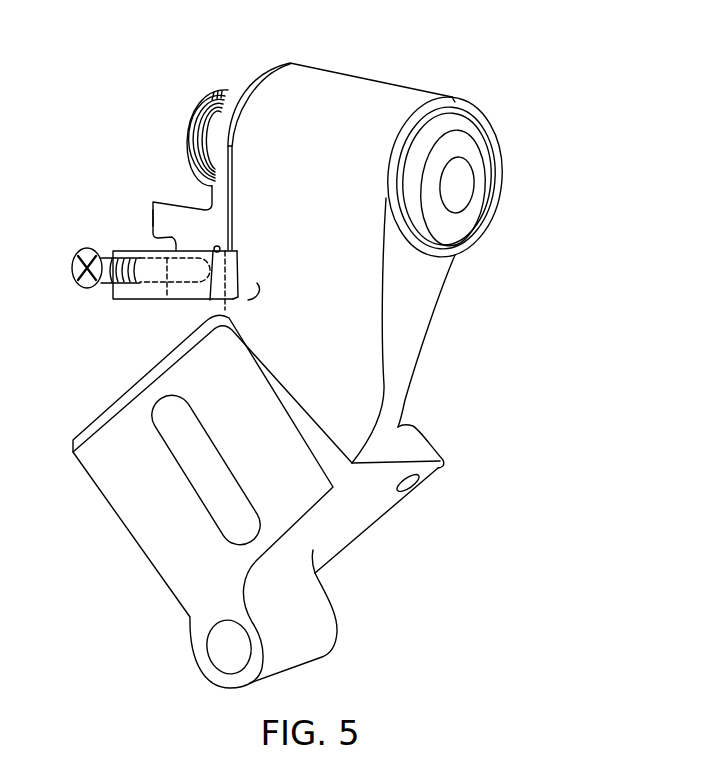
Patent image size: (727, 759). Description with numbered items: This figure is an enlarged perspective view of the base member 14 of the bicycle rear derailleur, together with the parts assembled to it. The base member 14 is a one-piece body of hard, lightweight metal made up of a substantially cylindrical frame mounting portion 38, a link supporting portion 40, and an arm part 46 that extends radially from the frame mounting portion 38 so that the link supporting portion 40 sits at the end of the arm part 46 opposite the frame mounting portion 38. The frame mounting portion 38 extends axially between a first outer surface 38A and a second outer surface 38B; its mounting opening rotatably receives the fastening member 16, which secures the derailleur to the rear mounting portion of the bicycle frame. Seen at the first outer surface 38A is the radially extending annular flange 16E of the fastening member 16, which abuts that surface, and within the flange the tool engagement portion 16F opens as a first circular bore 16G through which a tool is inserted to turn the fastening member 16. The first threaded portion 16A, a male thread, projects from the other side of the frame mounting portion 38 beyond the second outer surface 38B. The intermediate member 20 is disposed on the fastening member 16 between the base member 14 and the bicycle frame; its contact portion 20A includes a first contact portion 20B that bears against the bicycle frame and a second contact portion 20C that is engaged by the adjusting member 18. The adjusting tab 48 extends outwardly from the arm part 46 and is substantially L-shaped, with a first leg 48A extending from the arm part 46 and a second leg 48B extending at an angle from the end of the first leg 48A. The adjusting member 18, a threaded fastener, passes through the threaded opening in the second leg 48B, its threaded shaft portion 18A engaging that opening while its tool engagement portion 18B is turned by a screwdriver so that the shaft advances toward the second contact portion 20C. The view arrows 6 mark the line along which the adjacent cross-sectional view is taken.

The base member 14 is at (310, 243).
The frame mounting portion 38 is at (352, 74).
The first outer surface 38A is at (455, 103).
The second outer surface 38B is at (228, 146).
The intermediate member 20 is at (246, 69).
The contact portion 20A is at (143, 210).
The first contact portion 20B is at (152, 218).
The second contact portion 20C is at (217, 253).
The fastening member 16 is at (466, 174).
The first threaded portion 16A is at (207, 110).
The annular flange 16E is at (470, 103).
The tool engagement portion 16F is at (469, 214).
The first circular bore 16G is at (458, 178).
The arm part 46 is at (412, 373).
The link supporting portion 40 is at (343, 527).
The adjusting tab 48 is at (179, 287).
The first leg 48A is at (233, 270).
The second leg 48B is at (143, 299).
The adjusting member 18 is at (70, 293).
The threaded shaft portion 18A is at (112, 287).
The tool engagement portion 18B is at (75, 257).
The section line 6- 6 is at (182, 127).